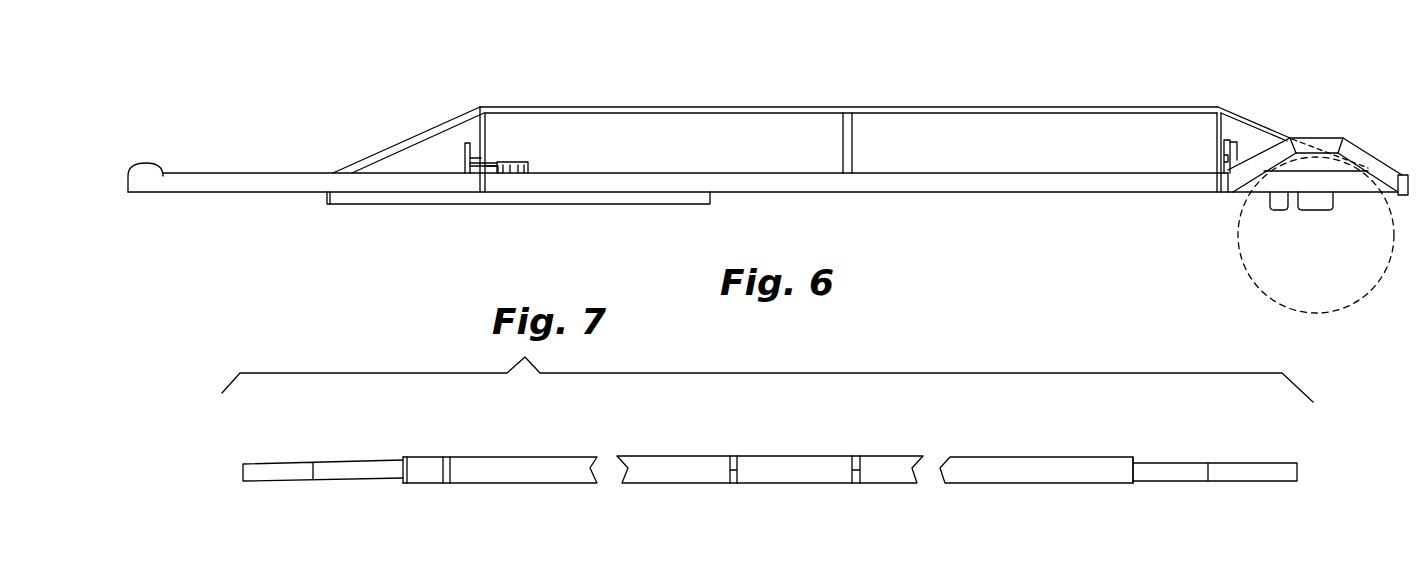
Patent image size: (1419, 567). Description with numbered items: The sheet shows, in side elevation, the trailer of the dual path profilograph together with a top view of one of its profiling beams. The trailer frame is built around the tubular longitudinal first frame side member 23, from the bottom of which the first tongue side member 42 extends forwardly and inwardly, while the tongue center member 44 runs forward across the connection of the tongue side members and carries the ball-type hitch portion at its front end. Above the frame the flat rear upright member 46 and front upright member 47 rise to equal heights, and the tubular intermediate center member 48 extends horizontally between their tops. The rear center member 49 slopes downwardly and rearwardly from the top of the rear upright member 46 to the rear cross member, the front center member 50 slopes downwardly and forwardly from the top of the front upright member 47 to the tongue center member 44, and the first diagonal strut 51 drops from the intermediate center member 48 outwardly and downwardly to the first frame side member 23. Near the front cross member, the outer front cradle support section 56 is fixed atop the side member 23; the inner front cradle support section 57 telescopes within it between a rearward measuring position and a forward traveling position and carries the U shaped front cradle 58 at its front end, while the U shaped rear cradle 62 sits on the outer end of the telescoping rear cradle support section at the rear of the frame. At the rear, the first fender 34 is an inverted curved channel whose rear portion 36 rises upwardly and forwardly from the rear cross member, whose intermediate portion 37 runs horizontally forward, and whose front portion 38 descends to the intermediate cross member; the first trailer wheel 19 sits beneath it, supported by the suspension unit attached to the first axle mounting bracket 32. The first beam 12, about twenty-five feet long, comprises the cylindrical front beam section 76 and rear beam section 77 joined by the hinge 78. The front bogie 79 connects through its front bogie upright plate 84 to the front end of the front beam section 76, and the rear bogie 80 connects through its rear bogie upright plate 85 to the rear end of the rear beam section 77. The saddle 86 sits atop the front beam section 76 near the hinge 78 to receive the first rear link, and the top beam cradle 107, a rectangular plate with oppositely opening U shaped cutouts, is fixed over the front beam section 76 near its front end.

In FIG. 7, the left first beam 12 is at (682, 428).
In FIG. 6, the left first trailer wheel 19 is at (1267, 295).
In FIG. 6, the first frame side member 23 is at (798, 186).
In FIG. 6, the first axle mounting bracket 32 is at (1327, 210).
In FIG. 6, the first fender 34 is at (1302, 138).
In FIG. 6, the rear portion 36 is at (1375, 157).
In FIG. 6, the intermediate portion 37 is at (1328, 138).
In FIG. 6, the front portion 38 is at (1233, 193).
In FIG. 6, the first tongue side member 42 is at (570, 204).
In FIG. 6, the tongue center member 44 is at (305, 197).
In FIG. 6, the rear upright member 46 is at (1226, 129).
In FIG. 6, the front upright member 47 is at (485, 142).
In FIG. 6, the intermediate center member 48 is at (1100, 113).
In FIG. 6, the rear center member 49 is at (1260, 122).
In FIG. 6, the front center member 50 is at (422, 132).
In FIG. 6, the first diagonal strut 51 is at (840, 145).
In FIG. 6, the outer front cradle support section 56 is at (507, 176).
In FIG. 6, the inner front cradle support section 57 is at (495, 176).
In FIG. 6, the front cradle 58 is at (467, 163).
In FIG. 6, the rear cradle 62 is at (1217, 157).
In FIG. 7, the front beam section 76 is at (605, 482).
In FIG. 7, the rear beam section 77 is at (947, 483).
In FIG. 7, the hinge 78 is at (860, 483).
In FIG. 7, the front bogie 79 is at (357, 461).
In FIG. 7, the rear bogie 80 is at (1173, 462).
In FIG. 7, the front bogie upright plate 84 is at (402, 483).
In FIG. 7, the rear bogie upright plate 85 is at (1138, 483).
In FIG. 7, the saddle 86 is at (737, 483).
In FIG. 7, the top beam cradle 107 is at (447, 483).